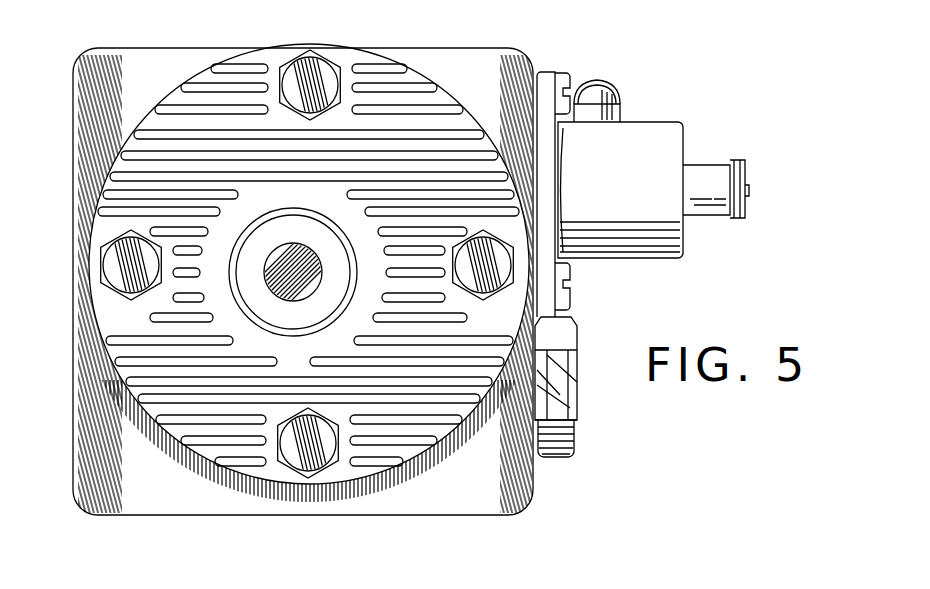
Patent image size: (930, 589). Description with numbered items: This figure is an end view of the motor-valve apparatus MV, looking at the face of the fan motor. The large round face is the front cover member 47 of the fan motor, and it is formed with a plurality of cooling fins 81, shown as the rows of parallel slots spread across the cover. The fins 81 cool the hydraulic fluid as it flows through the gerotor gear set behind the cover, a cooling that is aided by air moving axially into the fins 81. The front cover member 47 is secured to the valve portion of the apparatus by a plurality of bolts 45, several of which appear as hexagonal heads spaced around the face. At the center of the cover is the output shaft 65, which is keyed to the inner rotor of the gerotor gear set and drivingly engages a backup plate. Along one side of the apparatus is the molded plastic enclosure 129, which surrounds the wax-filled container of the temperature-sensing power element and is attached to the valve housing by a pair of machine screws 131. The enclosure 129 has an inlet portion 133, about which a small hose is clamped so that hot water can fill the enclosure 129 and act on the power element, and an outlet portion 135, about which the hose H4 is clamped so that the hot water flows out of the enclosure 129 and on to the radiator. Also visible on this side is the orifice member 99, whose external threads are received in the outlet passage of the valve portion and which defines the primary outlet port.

The bolts 45 is at (292, 62).
The front cover member 47 is at (348, 50).
The cooling fins 81 is at (478, 130).
The output shaft 65 is at (288, 248).
The machine screws 131 is at (567, 88).
The inlet portion 133 is at (614, 112).
The outlet portion 135 is at (706, 182).
The molded plastic enclosure 129 is at (665, 244).
The orifice member 99 is at (567, 370).
The motor-valve apparatus MV is at (605, 52).
The hose H4 is at (816, 190).